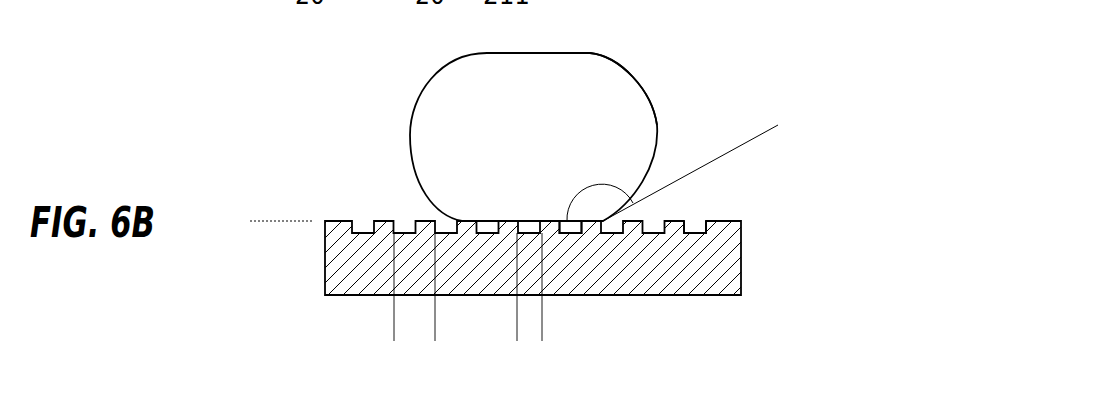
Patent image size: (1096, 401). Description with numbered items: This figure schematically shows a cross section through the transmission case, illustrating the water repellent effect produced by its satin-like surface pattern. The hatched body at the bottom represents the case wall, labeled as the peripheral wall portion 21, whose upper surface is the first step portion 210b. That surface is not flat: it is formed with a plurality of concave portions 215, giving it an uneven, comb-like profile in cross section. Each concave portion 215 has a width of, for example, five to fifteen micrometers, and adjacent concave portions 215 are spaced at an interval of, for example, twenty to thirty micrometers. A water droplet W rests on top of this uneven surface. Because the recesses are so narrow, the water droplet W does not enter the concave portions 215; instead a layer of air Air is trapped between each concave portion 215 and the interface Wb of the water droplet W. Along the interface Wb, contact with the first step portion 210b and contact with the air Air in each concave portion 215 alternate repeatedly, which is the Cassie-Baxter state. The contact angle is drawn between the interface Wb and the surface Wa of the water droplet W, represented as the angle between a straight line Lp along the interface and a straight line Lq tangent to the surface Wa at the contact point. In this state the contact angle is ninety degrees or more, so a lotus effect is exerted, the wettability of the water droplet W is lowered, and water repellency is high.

The peripheral wall portion 21 is at (748, 265).
The concave portion 215 is at (697, 228).
The first step portion 210b is at (728, 221).
The water droplet W is at (600, 80).
The surface of the water droplet Wa is at (641, 94).
The interface of the water droplet Wb is at (537, 219).
The straight line Lq is at (708, 162).
The straight line Lp is at (264, 219).
The air Air is at (567, 234).